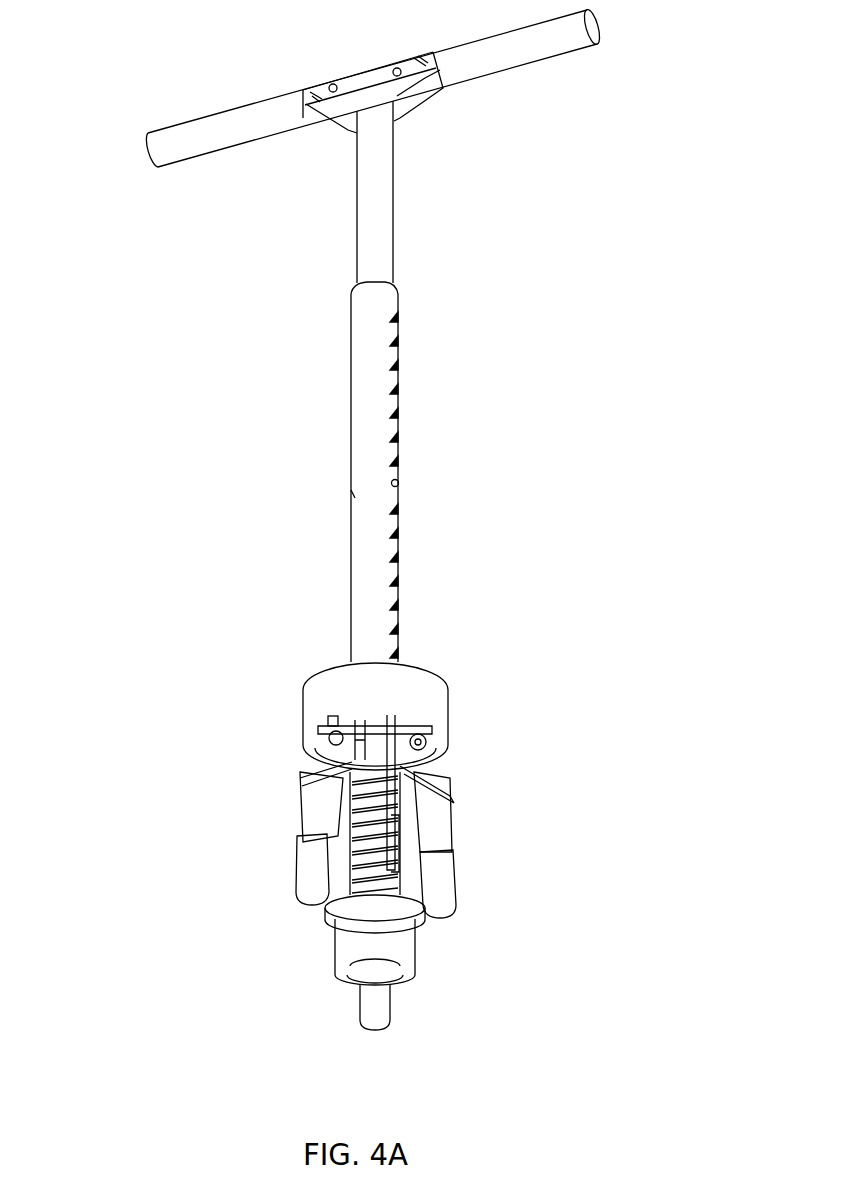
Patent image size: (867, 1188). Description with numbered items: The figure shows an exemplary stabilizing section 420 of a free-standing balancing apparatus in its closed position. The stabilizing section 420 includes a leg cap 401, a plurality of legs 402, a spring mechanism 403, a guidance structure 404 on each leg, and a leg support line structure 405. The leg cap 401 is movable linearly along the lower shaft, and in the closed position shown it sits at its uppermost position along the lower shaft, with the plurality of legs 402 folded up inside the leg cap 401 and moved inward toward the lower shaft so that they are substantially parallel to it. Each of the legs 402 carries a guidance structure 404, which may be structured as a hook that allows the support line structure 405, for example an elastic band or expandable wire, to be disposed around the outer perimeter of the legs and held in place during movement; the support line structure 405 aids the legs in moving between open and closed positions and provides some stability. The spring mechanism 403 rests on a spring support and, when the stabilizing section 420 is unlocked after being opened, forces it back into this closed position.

The leg cap 401 is at (453, 703).
The plurality of legs 402 is at (456, 888).
The spring mechanism 403 is at (344, 885).
The guidance structure 404 is at (453, 792).
The leg support line structure 405 is at (305, 776).
The stabilizing section 420 is at (270, 720).